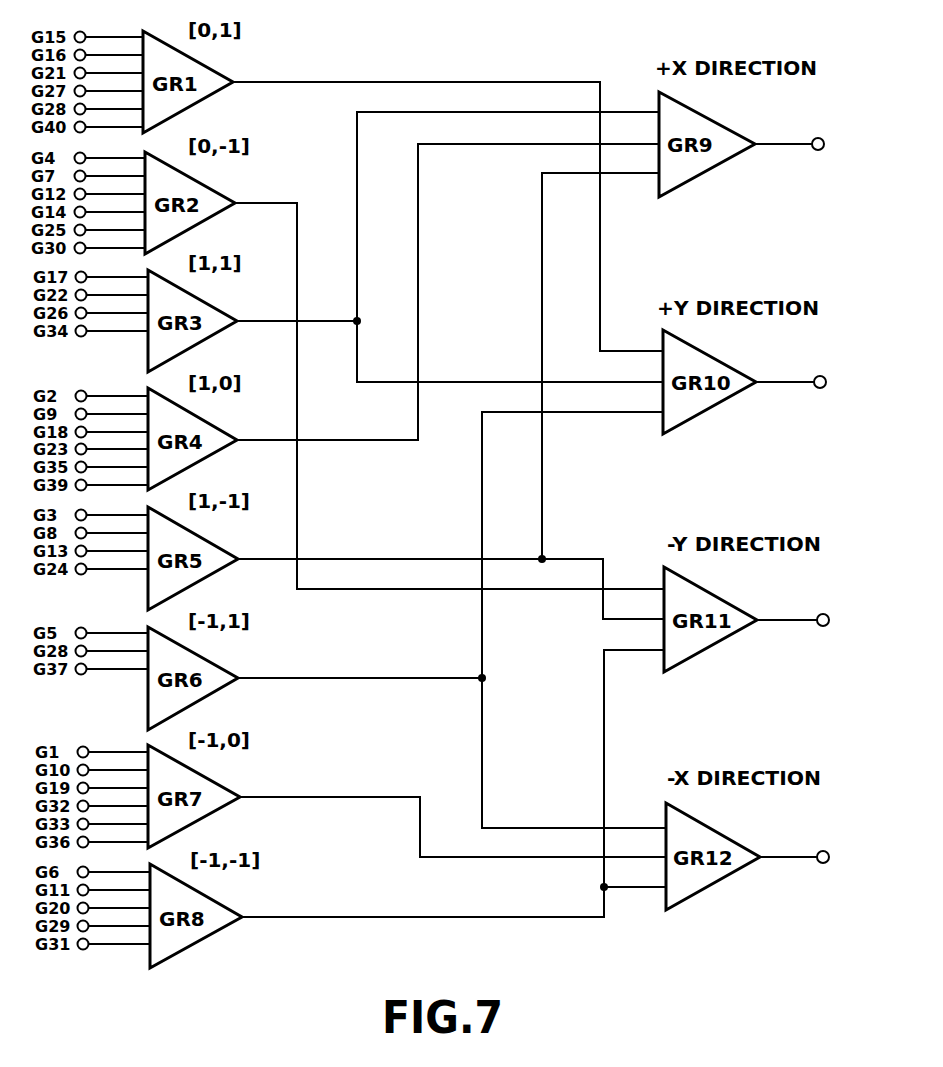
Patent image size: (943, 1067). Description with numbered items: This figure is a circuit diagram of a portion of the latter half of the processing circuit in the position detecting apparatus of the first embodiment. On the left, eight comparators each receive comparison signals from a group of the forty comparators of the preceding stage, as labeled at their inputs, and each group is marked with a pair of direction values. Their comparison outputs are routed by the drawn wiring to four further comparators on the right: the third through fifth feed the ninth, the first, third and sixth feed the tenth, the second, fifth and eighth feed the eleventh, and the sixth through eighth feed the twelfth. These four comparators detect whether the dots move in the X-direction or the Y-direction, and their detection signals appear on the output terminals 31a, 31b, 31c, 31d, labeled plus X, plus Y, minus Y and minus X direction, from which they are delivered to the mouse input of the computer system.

The output terminal 31a is at (817, 138).
The output terminal 31b is at (819, 376).
The output terminal 31c is at (822, 614).
The output terminal 31d is at (822, 851).